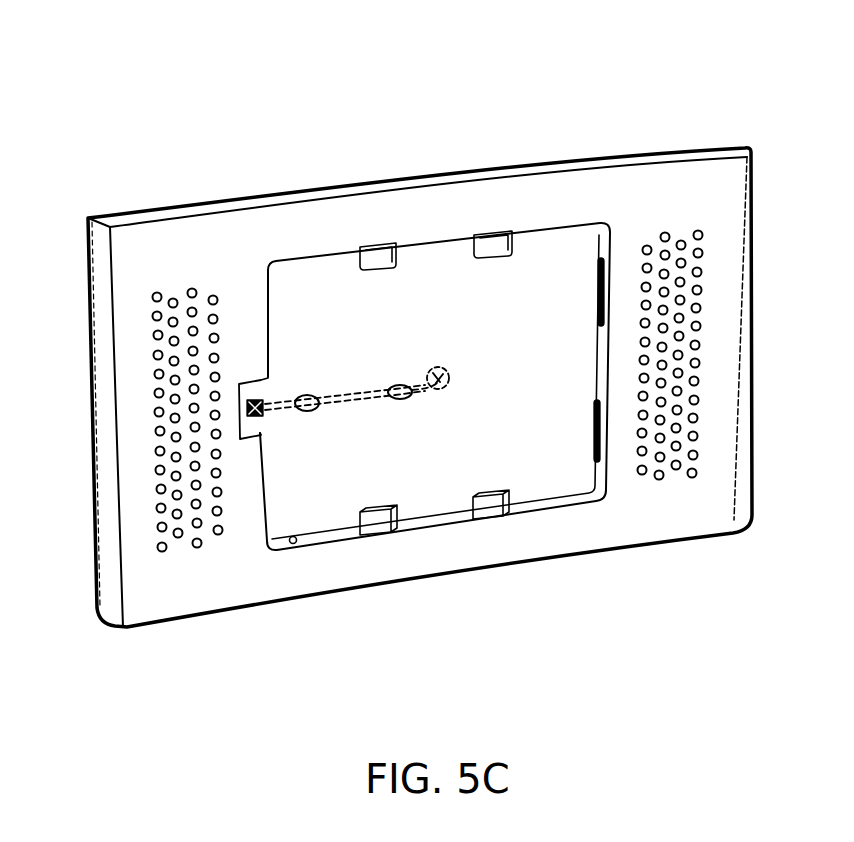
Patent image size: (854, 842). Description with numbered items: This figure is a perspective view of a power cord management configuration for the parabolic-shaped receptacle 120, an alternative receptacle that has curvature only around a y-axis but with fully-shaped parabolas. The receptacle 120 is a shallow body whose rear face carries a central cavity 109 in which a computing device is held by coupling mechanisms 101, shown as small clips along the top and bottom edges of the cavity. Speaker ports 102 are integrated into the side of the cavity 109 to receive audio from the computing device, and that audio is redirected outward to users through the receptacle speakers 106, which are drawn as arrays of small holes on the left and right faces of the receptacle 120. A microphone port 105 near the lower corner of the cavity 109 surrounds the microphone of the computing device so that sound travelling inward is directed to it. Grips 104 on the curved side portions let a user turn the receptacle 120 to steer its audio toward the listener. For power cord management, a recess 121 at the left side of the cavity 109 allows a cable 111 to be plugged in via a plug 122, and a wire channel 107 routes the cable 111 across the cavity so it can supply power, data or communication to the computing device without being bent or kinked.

The parabolic-shaped receptacle 120 is at (385, 90).
The grips 104 is at (103, 320).
The receptacle speakers 106 is at (180, 538).
The coupling mechanisms 101 is at (540, 232).
The cavity 109 is at (492, 328).
The speaker ports 102 is at (598, 297).
The microphone port 105 is at (298, 540).
The recess 121 is at (252, 437).
The plug 122 is at (240, 383).
The cable 111 is at (347, 401).
The wire channel 107 is at (398, 390).